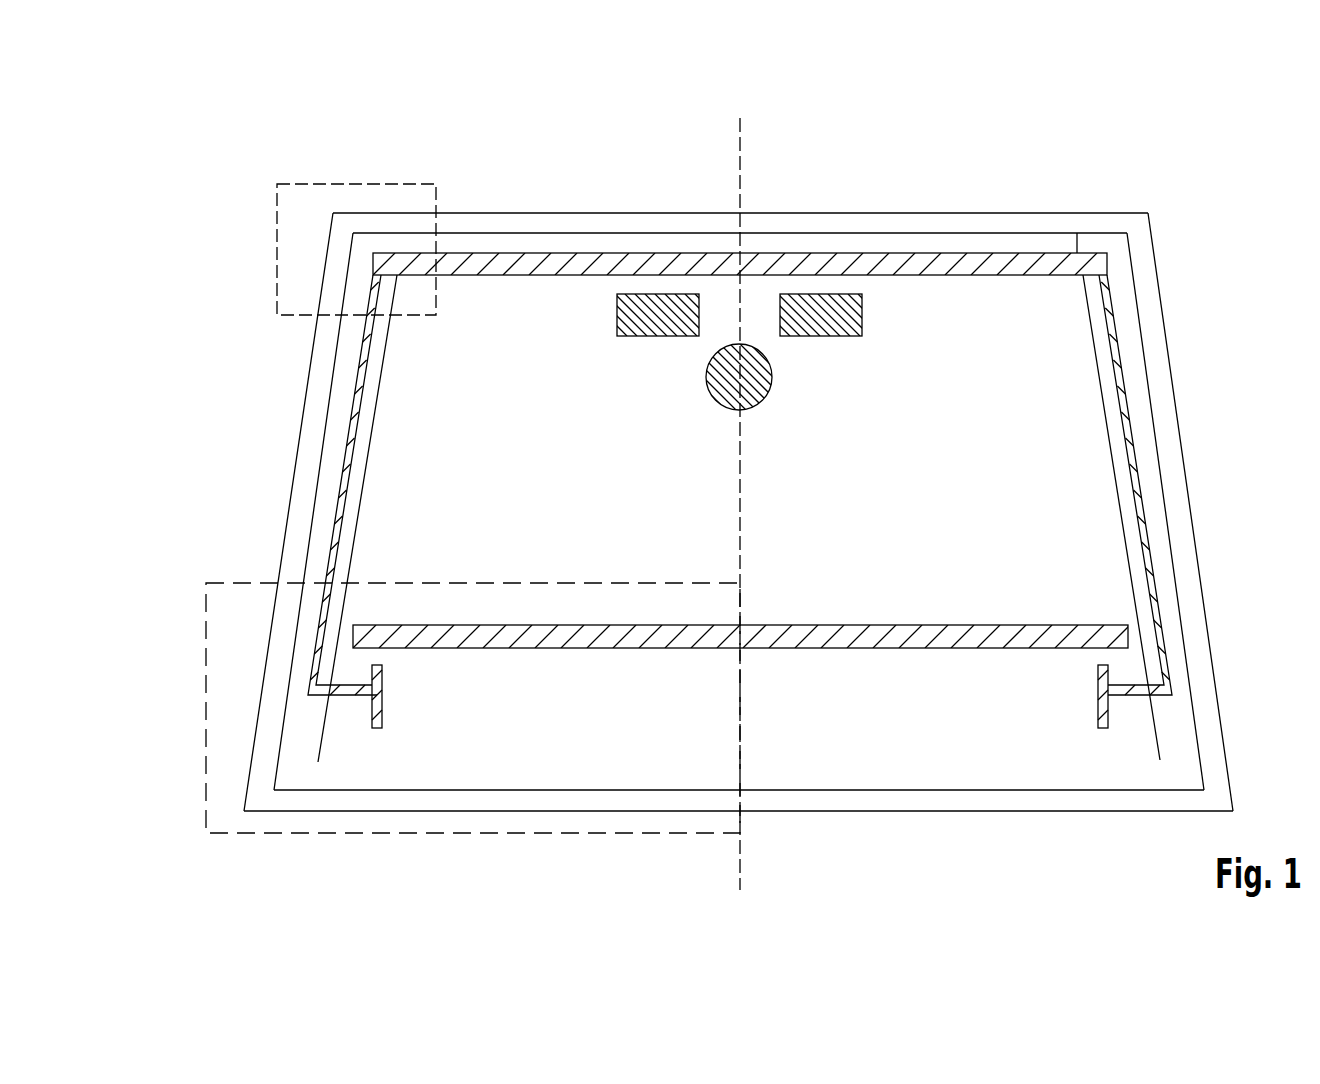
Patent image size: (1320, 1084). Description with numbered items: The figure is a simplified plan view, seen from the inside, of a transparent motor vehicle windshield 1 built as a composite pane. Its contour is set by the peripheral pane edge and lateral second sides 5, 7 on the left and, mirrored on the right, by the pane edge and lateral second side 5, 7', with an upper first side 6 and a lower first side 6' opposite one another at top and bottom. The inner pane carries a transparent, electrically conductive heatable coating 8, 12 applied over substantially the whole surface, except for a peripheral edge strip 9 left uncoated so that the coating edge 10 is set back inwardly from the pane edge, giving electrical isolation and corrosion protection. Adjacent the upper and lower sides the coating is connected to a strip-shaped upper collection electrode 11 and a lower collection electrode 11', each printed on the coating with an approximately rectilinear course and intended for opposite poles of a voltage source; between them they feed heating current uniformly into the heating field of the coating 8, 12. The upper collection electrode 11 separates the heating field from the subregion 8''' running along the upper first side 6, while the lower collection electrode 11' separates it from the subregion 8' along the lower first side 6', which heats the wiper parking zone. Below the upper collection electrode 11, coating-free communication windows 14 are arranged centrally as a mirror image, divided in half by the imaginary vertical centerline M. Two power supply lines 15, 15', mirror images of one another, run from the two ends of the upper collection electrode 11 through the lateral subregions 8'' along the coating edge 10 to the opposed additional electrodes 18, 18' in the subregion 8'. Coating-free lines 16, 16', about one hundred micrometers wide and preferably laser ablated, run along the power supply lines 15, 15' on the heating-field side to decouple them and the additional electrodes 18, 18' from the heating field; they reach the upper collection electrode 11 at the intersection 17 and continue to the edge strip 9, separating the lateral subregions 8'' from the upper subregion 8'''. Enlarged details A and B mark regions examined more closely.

The windshield 1 is at (1099, 194).
The outer pane edge (left) 5, 7 is at (275, 512).
The peripheral pane edge, lateral second side 5, 7' is at (1211, 512).
The upper first side of the pane edge 6 is at (740, 180).
The lower first side of the pane edge 6' is at (738, 849).
The lower electrically conductive coating 8' is at (739, 815).
The subregions of the electrically conductive coating 8'' is at (742, 511).
The subregion of the electrically conductive coating 8''' is at (740, 200).
The electrically conductive coating, heating field 8, 12 is at (1043, 440).
The peripheral edge strip 9 is at (1187, 565).
The peripheral coating edge 10 is at (1180, 598).
The upper collection electrode 11 is at (740, 211).
The lower collection electrode 11' is at (741, 756).
The communication window 14 is at (725, 357).
The power supply line 15 is at (294, 485).
The power supply line 15' is at (1190, 485).
The coating-free line 16 is at (295, 488).
The coating-free line 16' is at (1189, 488).
The intersection of the coating-free lines with the collection electrode 17 is at (414, 246).
The additional electrode 18 is at (401, 776).
The additional electrode 18' is at (1079, 776).
The enlarged detail of the windshield A is at (206, 727).
The enlarged detail of the windshield B is at (277, 215).
The vertical centerline and axis of symmetry M is at (746, 125).